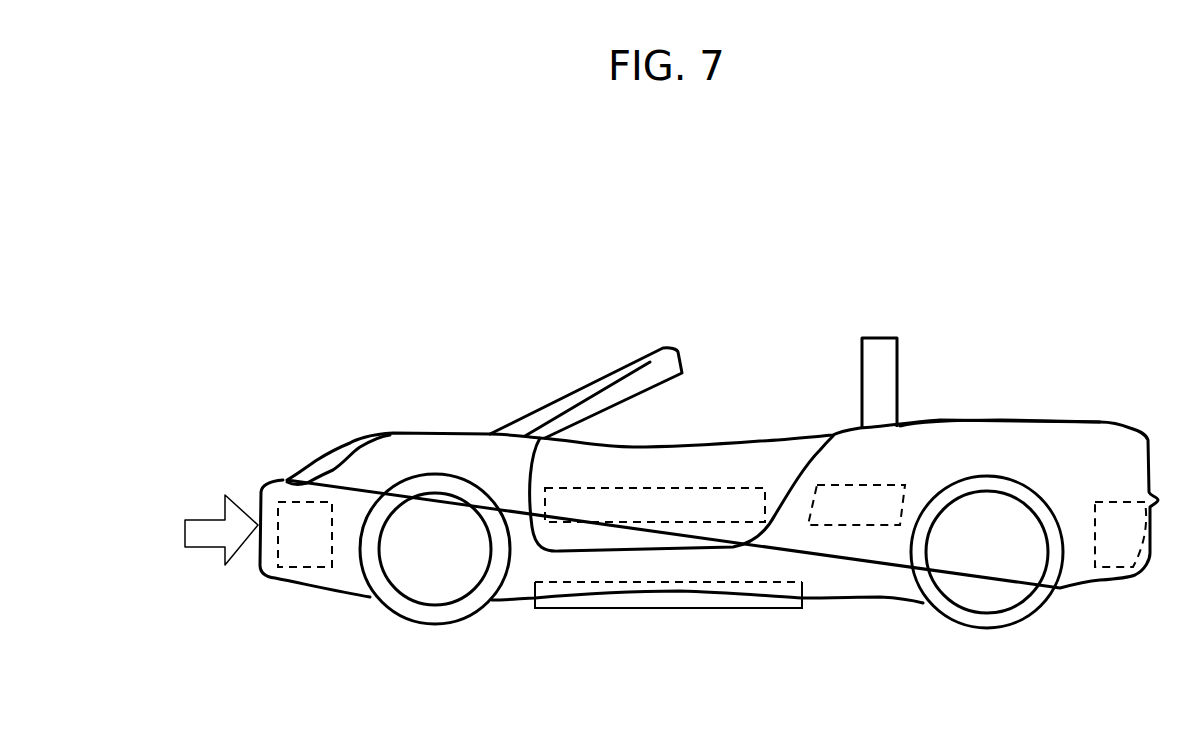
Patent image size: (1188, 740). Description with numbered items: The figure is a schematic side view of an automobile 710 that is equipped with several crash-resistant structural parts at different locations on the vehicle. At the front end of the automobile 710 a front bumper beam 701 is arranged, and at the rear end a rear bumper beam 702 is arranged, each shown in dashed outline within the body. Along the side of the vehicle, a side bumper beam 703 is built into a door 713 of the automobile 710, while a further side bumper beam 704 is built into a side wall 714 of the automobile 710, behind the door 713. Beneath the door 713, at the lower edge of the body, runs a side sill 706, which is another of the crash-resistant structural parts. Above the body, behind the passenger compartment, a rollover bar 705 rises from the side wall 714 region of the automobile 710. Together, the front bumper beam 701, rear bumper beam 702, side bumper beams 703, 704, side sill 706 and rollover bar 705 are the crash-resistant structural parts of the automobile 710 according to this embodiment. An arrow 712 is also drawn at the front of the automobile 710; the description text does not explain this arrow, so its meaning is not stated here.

The automobile 710 is at (310, 339).
The traveling direction arrow 712 is at (204, 520).
The door 713 is at (705, 440).
The side wall 714 is at (932, 420).
The rollover bar 705 is at (898, 353).
The front bumper beam 701 is at (300, 568).
The rear bumper beam 702 is at (1107, 497).
The side bumper beam 703 is at (607, 487).
The side bumper beam 704 is at (857, 527).
The side sill 706 is at (728, 610).